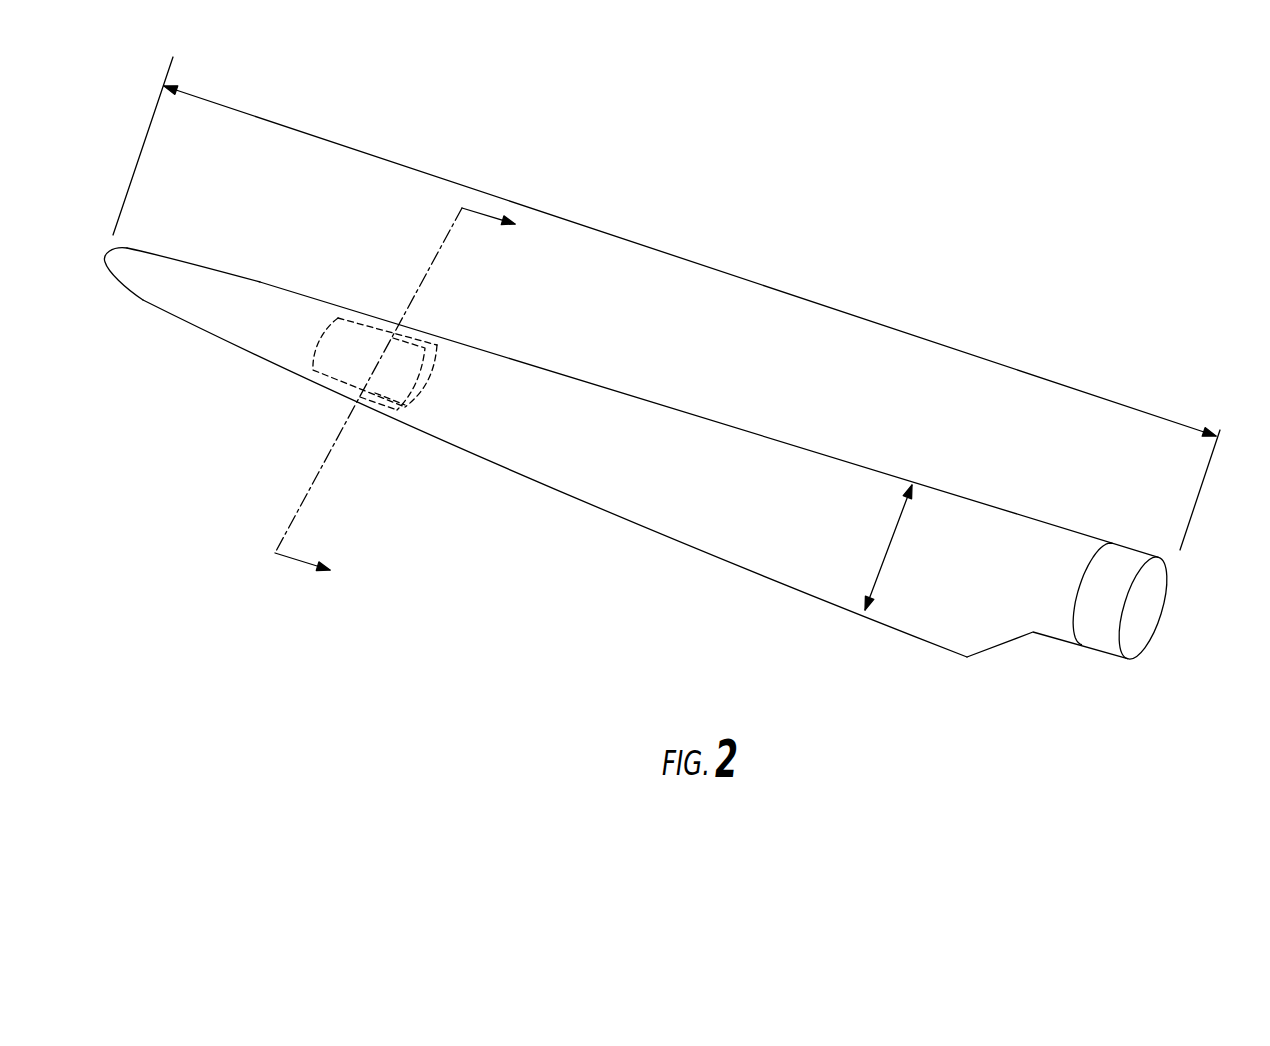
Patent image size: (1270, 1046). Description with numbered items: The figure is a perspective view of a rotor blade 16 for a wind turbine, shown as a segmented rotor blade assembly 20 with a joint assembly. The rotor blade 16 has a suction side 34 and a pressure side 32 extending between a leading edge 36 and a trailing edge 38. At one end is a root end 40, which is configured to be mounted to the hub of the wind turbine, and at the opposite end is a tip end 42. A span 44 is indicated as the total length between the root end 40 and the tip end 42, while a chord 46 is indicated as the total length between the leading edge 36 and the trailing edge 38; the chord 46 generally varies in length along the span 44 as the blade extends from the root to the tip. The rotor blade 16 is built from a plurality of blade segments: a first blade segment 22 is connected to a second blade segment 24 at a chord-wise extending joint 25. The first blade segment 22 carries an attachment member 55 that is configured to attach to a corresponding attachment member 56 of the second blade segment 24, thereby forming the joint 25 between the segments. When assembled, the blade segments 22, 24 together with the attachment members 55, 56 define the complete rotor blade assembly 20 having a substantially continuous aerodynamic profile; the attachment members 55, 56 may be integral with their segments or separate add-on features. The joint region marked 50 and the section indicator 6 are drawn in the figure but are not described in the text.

The section line 6- 6 is at (405, 400).
The rotor blade 16 is at (621, 443).
The rotor blade assembly 20 is at (621, 443).
The first blade segment 22 is at (621, 443).
The second blade segment 24 is at (193, 268).
The chord-wise extending joint 25 is at (392, 325).
The pressure side 32 is at (833, 563).
The suction side 34 is at (770, 548).
The leading edge 36 is at (772, 440).
The trailing edge 38 is at (678, 543).
The root end 40 is at (1132, 568).
The tip end 42 is at (107, 259).
The span 44 is at (682, 256).
The chord 46 is at (883, 562).
The leading edge protection patch 50 is at (391, 354).
The attachment member 55 is at (386, 392).
The attachment member 56 is at (408, 397).